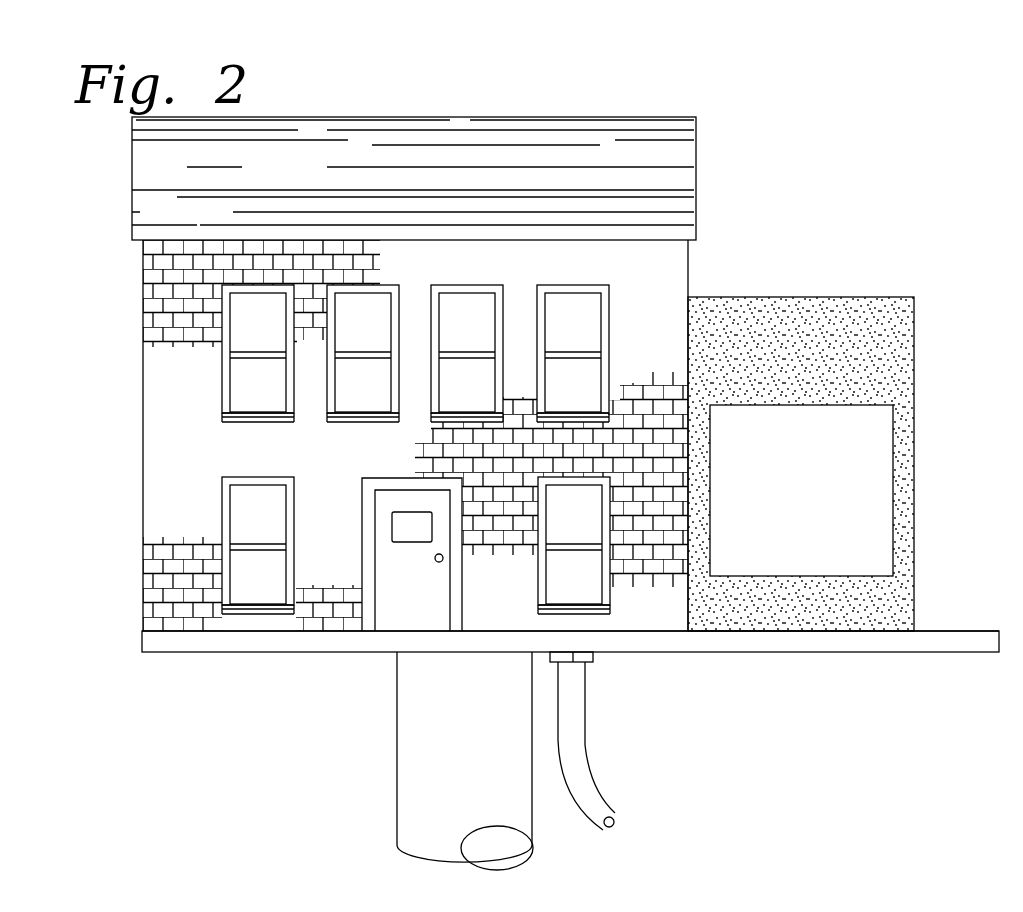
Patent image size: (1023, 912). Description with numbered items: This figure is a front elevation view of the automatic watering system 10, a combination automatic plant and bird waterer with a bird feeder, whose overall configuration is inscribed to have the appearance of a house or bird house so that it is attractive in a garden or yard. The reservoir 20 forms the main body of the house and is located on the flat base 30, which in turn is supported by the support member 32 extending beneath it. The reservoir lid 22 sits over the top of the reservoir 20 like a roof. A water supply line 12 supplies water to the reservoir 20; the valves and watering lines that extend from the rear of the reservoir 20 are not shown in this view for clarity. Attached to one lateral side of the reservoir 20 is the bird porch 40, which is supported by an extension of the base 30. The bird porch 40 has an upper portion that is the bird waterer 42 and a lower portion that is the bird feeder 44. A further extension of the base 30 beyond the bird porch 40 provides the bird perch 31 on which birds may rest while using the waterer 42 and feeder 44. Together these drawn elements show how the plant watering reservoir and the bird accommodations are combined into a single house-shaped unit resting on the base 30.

The automatic watering system 10 is at (636, 103).
The water supply line 12 is at (577, 750).
The reservoir 20 is at (665, 276).
The reservoir lid 22 is at (679, 155).
The base 30 is at (338, 652).
The bird perch 31 is at (948, 630).
The support member 32 is at (407, 737).
The bird porch 40 is at (818, 277).
The bird waterer 42 is at (870, 297).
The bird feeder 44 is at (793, 585).